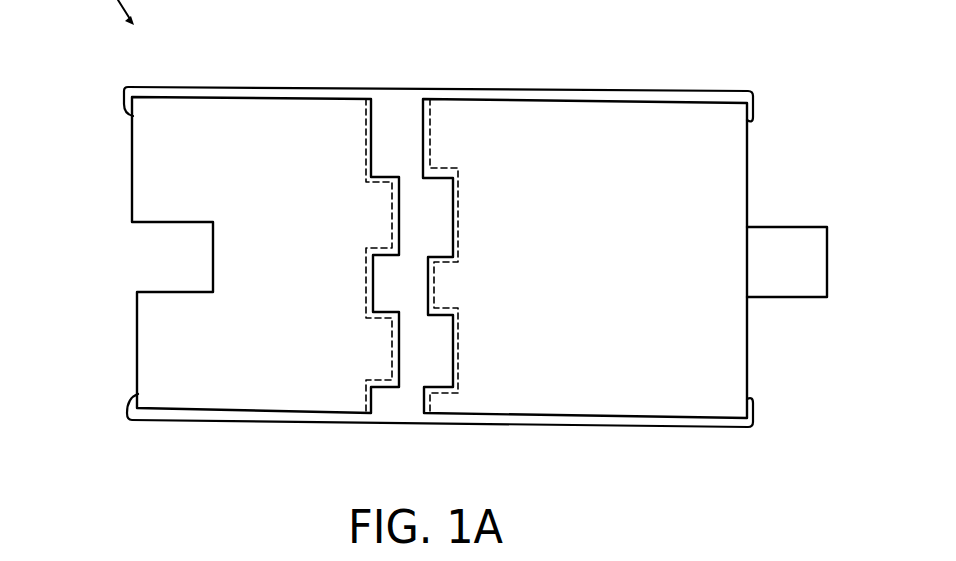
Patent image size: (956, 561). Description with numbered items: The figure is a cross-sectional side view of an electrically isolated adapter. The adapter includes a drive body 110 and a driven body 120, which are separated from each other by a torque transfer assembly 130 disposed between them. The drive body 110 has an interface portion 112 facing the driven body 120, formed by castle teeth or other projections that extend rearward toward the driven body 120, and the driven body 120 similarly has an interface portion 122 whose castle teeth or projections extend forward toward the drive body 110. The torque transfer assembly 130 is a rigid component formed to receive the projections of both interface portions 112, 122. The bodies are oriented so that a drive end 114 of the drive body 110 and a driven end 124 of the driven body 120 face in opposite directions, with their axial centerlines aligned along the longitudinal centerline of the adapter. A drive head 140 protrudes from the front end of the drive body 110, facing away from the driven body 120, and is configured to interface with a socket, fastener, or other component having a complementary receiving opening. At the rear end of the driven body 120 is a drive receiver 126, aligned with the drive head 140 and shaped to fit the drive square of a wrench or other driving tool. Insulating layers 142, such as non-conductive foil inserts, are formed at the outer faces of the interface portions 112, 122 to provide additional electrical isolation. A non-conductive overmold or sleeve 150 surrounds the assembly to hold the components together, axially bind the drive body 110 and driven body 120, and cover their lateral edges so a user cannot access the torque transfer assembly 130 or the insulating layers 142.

The drive body 110 is at (632, 385).
The interface portion 112 is at (440, 400).
The drive end 114 is at (747, 170).
The driven body 120 is at (283, 392).
The interface portion 122 is at (383, 392).
The driven end 124 is at (131, 170).
The drive receiver 126 is at (158, 262).
The torque transfer assembly 130 is at (395, 145).
The drive head 140 is at (773, 283).
The insulating layers 142 is at (367, 123).
The sleeve 150 is at (290, 92).